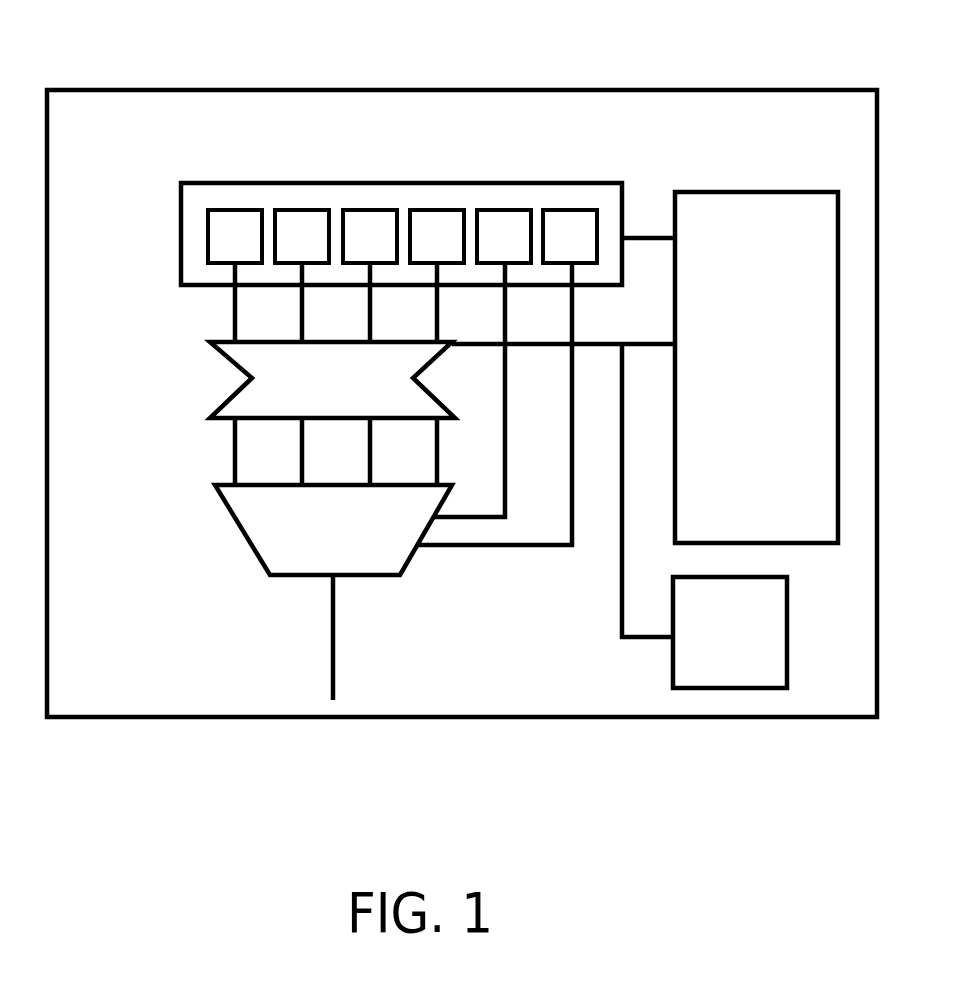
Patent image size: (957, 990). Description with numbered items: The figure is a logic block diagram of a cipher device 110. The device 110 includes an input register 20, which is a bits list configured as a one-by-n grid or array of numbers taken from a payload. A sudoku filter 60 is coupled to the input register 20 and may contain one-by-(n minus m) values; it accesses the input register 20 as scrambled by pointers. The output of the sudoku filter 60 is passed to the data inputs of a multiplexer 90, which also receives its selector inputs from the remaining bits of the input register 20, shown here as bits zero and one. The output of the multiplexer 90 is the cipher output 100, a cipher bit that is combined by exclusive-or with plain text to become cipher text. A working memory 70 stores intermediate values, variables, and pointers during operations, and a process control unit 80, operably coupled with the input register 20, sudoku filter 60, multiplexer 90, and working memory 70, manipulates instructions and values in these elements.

The cipher device 110 is at (363, 90).
The input register 20 is at (181, 233).
The sudoku filter 60 is at (363, 398).
The multiplexer 90 is at (363, 548).
The cipher output 100 is at (332, 682).
The working memory 70 is at (735, 192).
The process control unit 80 is at (787, 655).